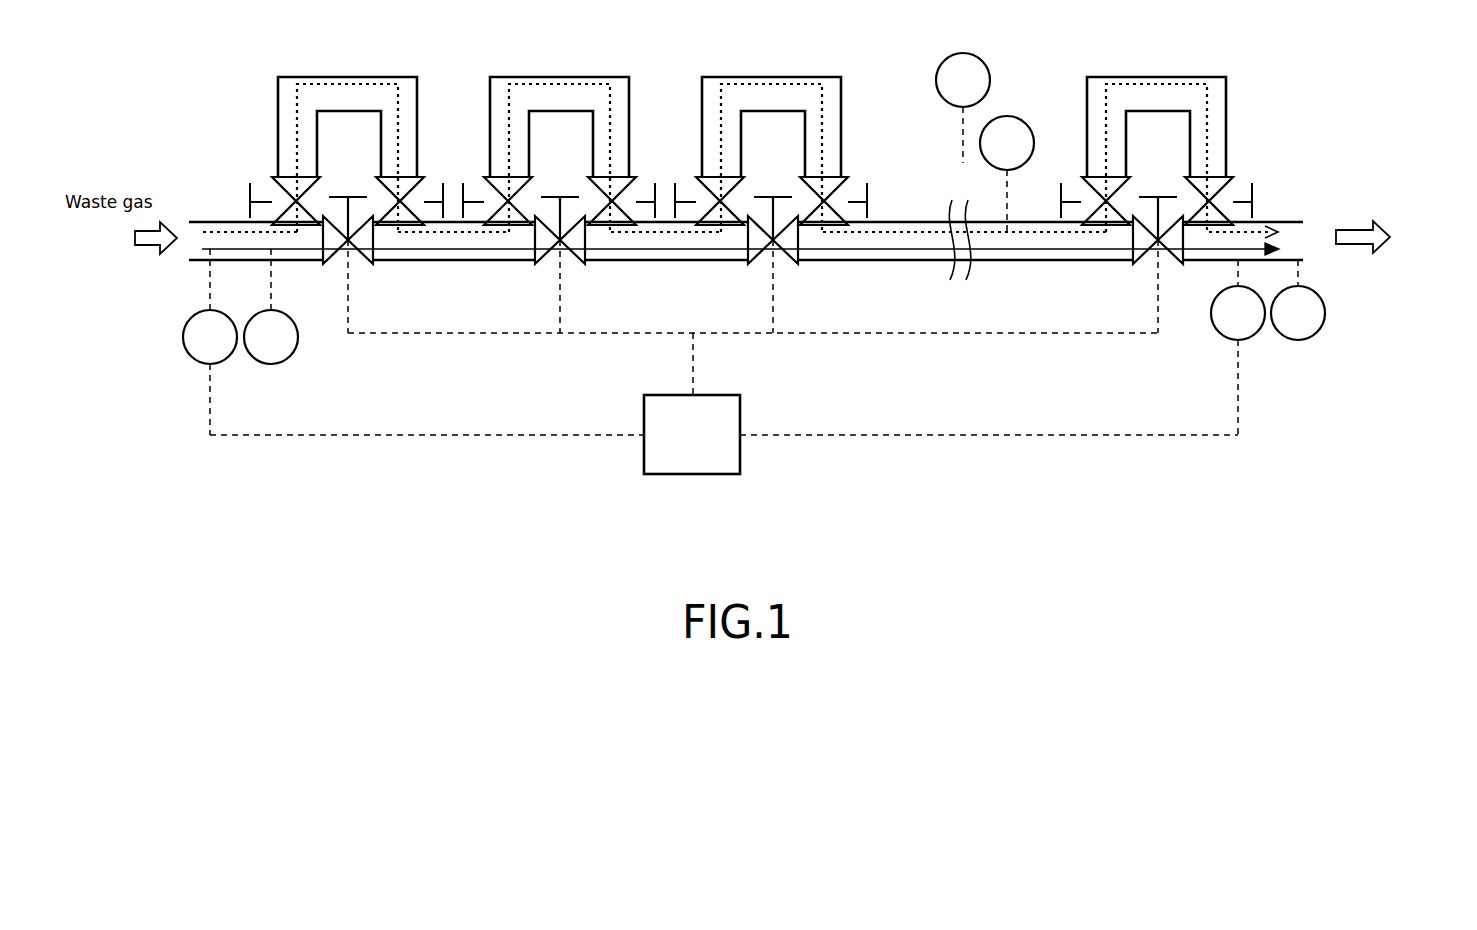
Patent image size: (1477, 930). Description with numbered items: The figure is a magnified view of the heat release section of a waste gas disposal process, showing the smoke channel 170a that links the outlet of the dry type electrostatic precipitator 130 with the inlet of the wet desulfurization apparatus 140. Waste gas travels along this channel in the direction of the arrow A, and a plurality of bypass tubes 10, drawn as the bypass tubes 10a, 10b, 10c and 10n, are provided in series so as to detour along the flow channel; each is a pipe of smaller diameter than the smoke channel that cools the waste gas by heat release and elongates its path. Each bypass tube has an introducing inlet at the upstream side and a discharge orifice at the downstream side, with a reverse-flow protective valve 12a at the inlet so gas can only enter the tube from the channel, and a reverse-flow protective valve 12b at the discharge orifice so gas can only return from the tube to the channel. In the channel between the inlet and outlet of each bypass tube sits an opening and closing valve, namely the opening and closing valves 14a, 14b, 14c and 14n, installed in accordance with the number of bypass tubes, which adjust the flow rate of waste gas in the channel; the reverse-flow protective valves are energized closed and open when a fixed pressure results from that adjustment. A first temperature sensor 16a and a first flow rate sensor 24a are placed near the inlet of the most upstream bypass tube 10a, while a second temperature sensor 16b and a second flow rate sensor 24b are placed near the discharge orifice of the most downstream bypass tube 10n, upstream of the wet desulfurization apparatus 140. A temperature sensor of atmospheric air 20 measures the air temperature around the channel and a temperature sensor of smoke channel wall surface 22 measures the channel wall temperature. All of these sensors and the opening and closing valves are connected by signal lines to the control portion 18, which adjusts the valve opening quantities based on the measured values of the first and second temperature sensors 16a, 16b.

The bypass tube 10 is at (801, 122).
The bypass tube 10a is at (277, 102).
The bypass tube 10b is at (548, 77).
The bypass tube 10c is at (768, 77).
The bypass tube 10n is at (1229, 90).
The reverse-flow protective valve 12a is at (250, 190).
The reverse-flow protective valve 12b is at (443, 190).
The opening and closing valve 14a is at (362, 262).
The opening and closing valve 14b is at (575, 262).
The opening and closing valve 14c is at (790, 262).
The opening and closing valve 14n is at (1138, 262).
The first temperature sensor 16a is at (183, 340).
The second temperature sensor 16b is at (1245, 337).
The control portion 18 is at (692, 474).
The temperature sensor of atmospheric air 20 is at (970, 53).
The temperature sensor of smoke channel wall surface 22 is at (1017, 118).
The first flow rate sensor 24a is at (268, 364).
The second flow rate sensor 24b is at (1312, 336).
The dry type electrostatic precipitator 130 is at (126, 238).
The wet desulfurization apparatus 140 is at (1386, 237).
The smoke channel 170a is at (670, 262).
The arrow A is at (898, 252).